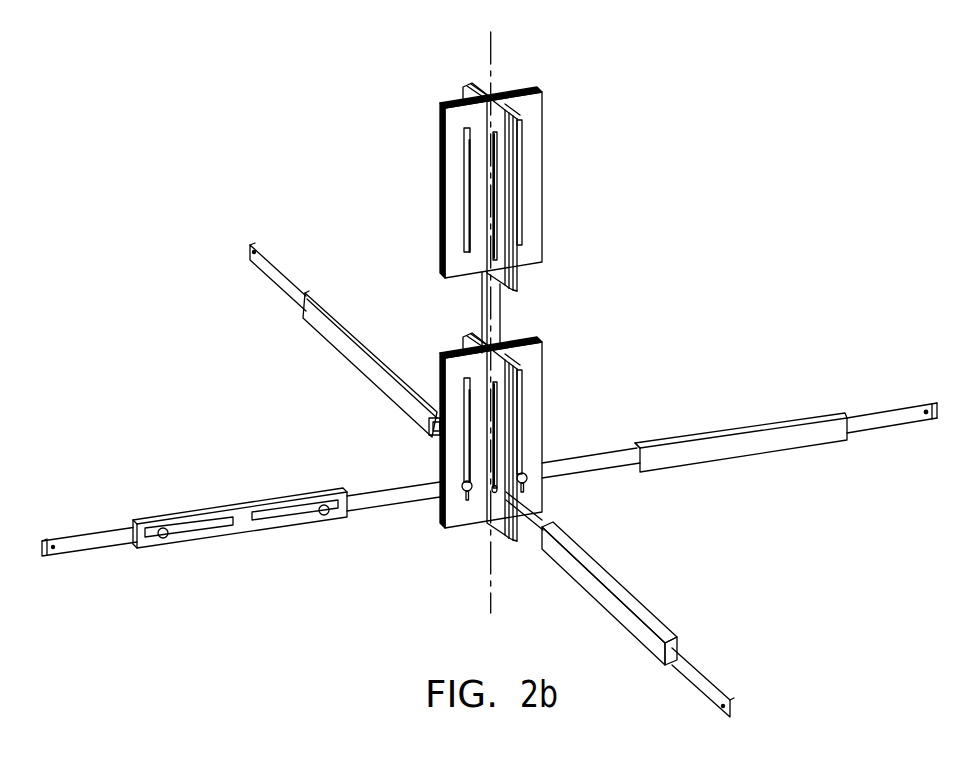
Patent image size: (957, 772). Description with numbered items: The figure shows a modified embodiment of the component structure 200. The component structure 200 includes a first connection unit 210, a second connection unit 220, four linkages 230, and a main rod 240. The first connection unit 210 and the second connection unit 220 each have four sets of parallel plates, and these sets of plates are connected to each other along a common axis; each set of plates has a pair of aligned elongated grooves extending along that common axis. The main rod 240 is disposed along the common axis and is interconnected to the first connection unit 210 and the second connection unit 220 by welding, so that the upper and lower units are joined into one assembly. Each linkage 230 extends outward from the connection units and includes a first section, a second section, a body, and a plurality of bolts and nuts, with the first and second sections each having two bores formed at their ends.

The component structure 200 is at (110, 79).
The first connection unit 210 is at (542, 172).
The second connection unit 220 is at (542, 382).
The linkage 230 is at (238, 503).
The main rod 240 is at (500, 318).